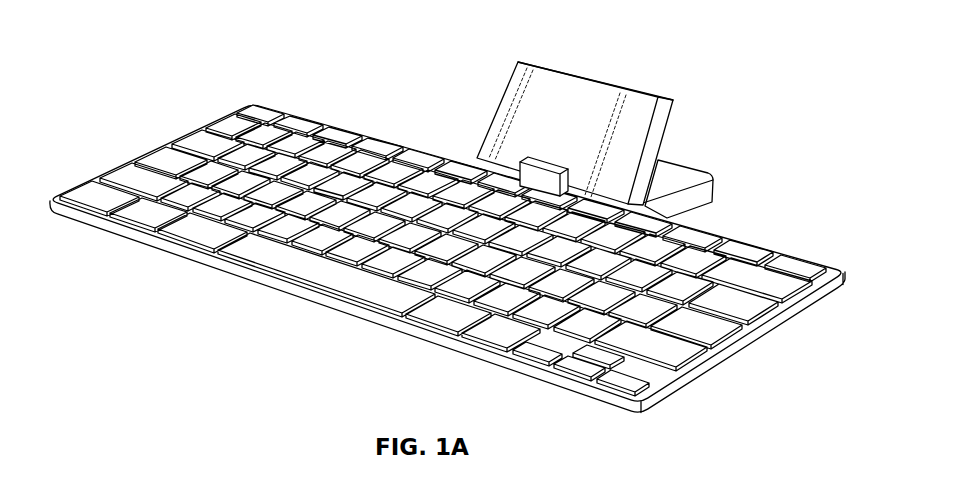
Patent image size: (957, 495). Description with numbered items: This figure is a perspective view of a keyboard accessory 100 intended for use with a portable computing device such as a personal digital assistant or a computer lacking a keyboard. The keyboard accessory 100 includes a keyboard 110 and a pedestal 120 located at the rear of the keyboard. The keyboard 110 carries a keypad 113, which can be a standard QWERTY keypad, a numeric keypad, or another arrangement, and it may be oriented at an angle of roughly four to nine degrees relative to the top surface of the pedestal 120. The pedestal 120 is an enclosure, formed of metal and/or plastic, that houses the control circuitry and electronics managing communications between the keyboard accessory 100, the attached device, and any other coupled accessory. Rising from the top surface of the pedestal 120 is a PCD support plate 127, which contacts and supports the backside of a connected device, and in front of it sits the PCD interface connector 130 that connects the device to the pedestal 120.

The keyboard dock assembly 100 is at (447, 217).
The keyboard housing 110 is at (717, 372).
The keys 113 is at (300, 283).
The dock 120 is at (627, 127).
The support plate 127 is at (582, 70).
The connector block 130 is at (548, 168).